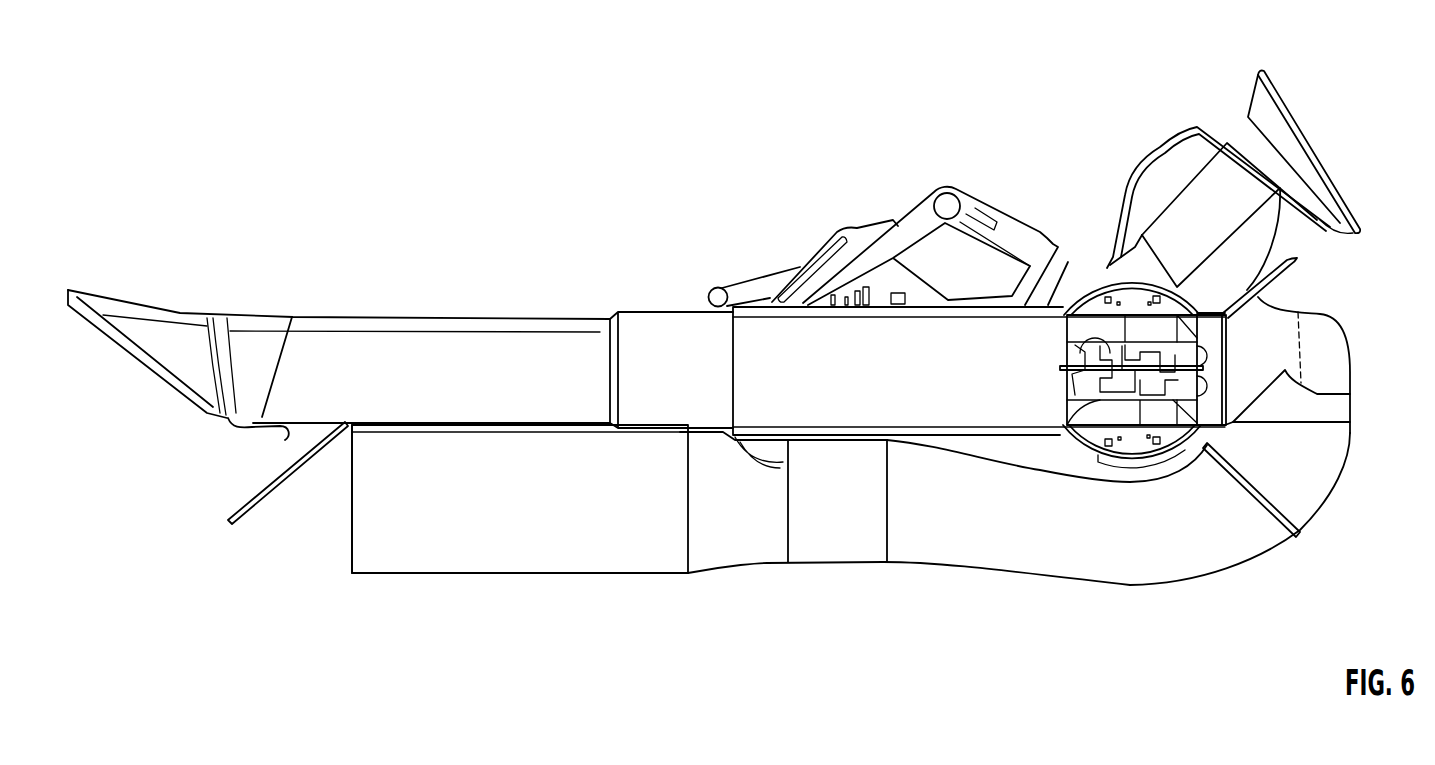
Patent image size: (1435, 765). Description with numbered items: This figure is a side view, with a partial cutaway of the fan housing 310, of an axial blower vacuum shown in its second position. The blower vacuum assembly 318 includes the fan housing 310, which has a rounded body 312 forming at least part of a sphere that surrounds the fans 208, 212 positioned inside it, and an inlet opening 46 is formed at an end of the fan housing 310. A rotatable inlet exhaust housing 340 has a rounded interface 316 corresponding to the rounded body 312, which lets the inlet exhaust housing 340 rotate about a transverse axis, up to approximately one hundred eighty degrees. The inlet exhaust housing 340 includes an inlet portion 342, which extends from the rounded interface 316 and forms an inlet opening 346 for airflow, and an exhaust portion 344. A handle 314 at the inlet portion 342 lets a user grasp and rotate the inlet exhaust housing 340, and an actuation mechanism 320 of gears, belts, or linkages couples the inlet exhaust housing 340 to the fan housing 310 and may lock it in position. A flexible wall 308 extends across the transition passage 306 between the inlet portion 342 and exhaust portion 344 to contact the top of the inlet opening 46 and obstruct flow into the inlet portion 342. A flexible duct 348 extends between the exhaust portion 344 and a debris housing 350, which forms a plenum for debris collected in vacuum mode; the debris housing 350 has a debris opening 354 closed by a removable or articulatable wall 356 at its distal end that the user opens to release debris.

The inlet opening 46 is at (1227, 360).
The first fan 208 is at (1187, 433).
The second fan 212 is at (1065, 425).
The transition passage 306 is at (1262, 297).
The wall 308 is at (1287, 258).
The fan housing 310 is at (1097, 293).
The rounded body 312 is at (1118, 282).
The handle 314 is at (1153, 153).
The rounded interface 316 is at (1145, 466).
The blower vacuum assembly 318 is at (1018, 453).
The actuation mechanism 320 is at (1130, 413).
The inlet exhaust housing 340 is at (1320, 532).
The inlet portion 342 is at (1233, 182).
The exhaust portion 344 is at (1318, 470).
The inlet opening 346 is at (1325, 137).
The duct 348 is at (922, 537).
The debris housing 350 is at (467, 545).
The debris opening 354 is at (342, 517).
The wall 356 is at (242, 513).